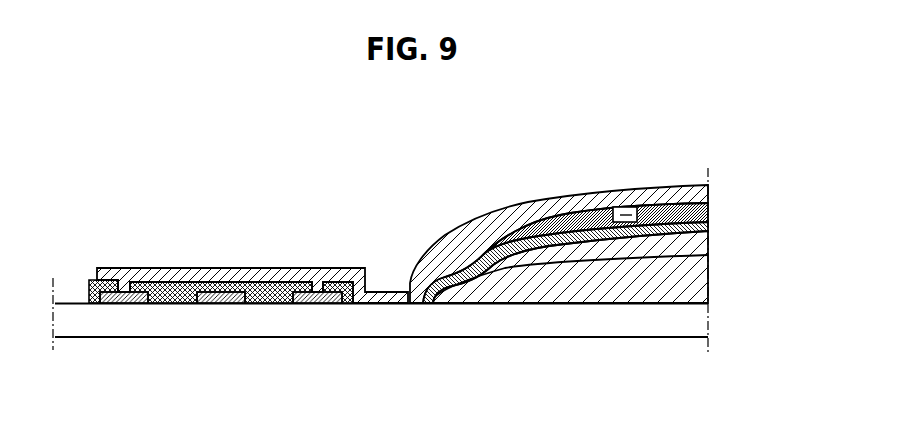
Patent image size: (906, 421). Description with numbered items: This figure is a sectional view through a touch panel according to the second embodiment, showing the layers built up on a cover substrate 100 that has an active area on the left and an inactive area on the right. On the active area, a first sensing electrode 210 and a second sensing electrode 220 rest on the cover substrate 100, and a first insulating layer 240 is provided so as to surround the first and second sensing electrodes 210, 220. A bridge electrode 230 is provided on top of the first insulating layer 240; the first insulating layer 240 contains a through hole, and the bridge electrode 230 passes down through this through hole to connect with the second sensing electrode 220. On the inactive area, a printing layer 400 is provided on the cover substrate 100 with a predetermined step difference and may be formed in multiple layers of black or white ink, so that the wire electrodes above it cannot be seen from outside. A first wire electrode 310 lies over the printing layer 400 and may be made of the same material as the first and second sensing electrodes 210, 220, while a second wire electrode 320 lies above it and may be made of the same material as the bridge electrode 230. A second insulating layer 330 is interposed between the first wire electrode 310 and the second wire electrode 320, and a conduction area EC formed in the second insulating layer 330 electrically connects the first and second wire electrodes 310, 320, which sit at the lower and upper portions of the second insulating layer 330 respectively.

The cover substrate 100 is at (698, 325).
The first sensing electrode 210 is at (123, 304).
The second sensing electrode 220 is at (220, 304).
The bridge electrode 230 is at (222, 268).
The first insulating layer 240 is at (173, 304).
The first wire electrode 310 is at (708, 230).
The second wire electrode 320 is at (707, 191).
The second insulating layer 330 is at (707, 209).
The printing layer 400 is at (697, 282).
The conduction area EC is at (627, 214).